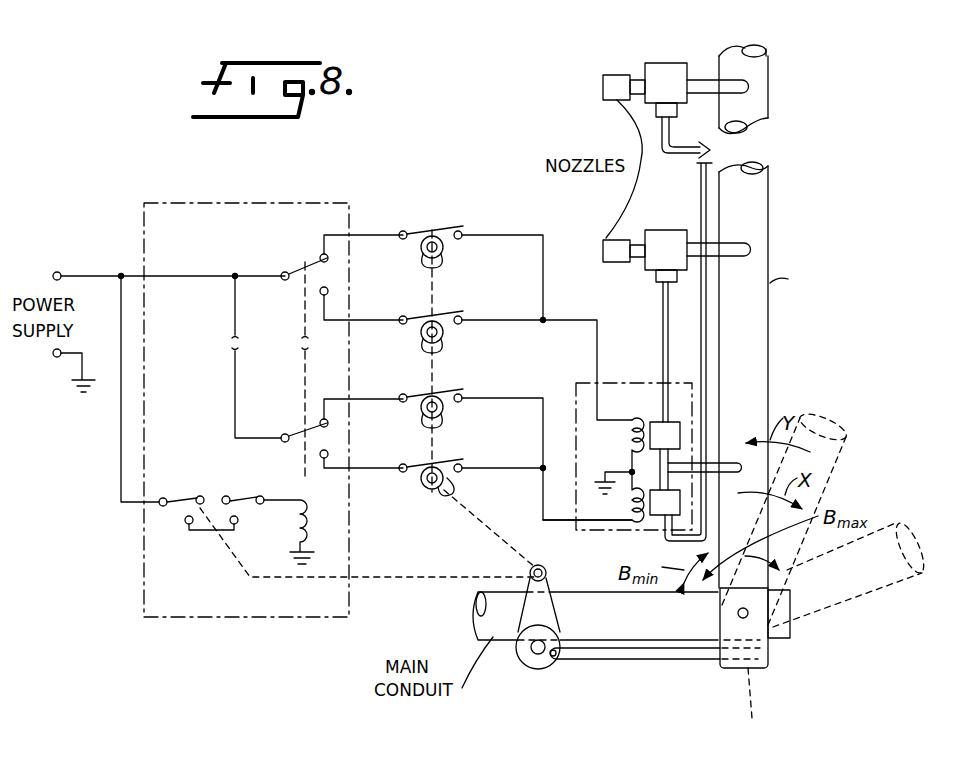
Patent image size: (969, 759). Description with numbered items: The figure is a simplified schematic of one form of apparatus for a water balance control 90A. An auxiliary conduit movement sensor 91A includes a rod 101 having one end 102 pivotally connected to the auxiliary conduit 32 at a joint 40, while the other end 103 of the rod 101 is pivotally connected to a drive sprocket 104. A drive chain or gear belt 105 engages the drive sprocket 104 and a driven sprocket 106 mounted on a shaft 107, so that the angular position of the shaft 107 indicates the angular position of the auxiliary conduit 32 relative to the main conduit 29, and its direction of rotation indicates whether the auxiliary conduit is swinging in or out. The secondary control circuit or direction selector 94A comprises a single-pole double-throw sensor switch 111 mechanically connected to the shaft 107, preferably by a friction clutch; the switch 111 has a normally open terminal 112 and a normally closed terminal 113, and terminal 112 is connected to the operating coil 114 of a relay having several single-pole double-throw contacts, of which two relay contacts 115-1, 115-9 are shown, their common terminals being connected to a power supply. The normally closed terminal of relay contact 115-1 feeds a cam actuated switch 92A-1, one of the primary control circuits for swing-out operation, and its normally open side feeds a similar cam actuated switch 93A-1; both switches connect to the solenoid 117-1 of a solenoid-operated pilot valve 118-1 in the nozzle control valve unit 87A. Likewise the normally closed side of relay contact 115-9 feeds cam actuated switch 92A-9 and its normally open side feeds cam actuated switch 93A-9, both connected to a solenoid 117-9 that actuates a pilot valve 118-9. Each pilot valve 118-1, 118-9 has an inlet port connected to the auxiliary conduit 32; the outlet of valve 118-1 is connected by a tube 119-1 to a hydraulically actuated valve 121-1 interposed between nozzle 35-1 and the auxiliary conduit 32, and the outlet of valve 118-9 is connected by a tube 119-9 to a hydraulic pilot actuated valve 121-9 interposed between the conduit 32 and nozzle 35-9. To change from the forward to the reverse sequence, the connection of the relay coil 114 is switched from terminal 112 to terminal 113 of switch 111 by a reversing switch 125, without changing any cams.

The secondary control circuit or direction selector 94A is at (221, 203).
The relay contact 115-1 is at (306, 262).
The relay contact 115-9 is at (300, 432).
The sensor switch 111 is at (158, 503).
The normally open terminal 112 is at (204, 496).
The normally closed terminal 113 is at (185, 521).
The reversing switch 125 is at (252, 497).
The operating coil 114 is at (300, 540).
The water balance control 90A is at (425, 188).
The cam actuated switch 92A-1 is at (448, 245).
The cam actuated switch 93A-1 is at (448, 330).
The cam actuated switch 92A-9 is at (448, 410).
The cam actuated switch 93A-9 is at (448, 482).
The nozzle control valve unit 87A is at (578, 385).
The solenoid 117-1 is at (640, 405).
The solenoid 117-9 is at (626, 508).
The solenoid-operated pilot valve 118-1 is at (652, 422).
The pilot valve 118-9 is at (656, 516).
The tube 119-1 is at (663, 333).
The tube 119-9 is at (701, 187).
The hydraulically actuated valve 121-1 is at (670, 222).
The hydraulic pilot actuated valve 121-9 is at (660, 74).
The nozzle 35-1 is at (618, 262).
The nozzle 35-9 is at (603, 88).
The auxiliary conduit 32 is at (752, 172).
The driven sprocket 106 is at (552, 563).
The shaft 107 is at (546, 573).
The drive chain or gear belt 105 is at (562, 620).
The drive sprocket 104 is at (534, 670).
The other end of rod 103 is at (552, 665).
The main conduit 29 is at (648, 628).
The auxiliary conduit movement sensor 91A is at (566, 674).
The rod 101 is at (652, 657).
The one end of rod 102 is at (760, 674).
The joint 40 is at (775, 650).